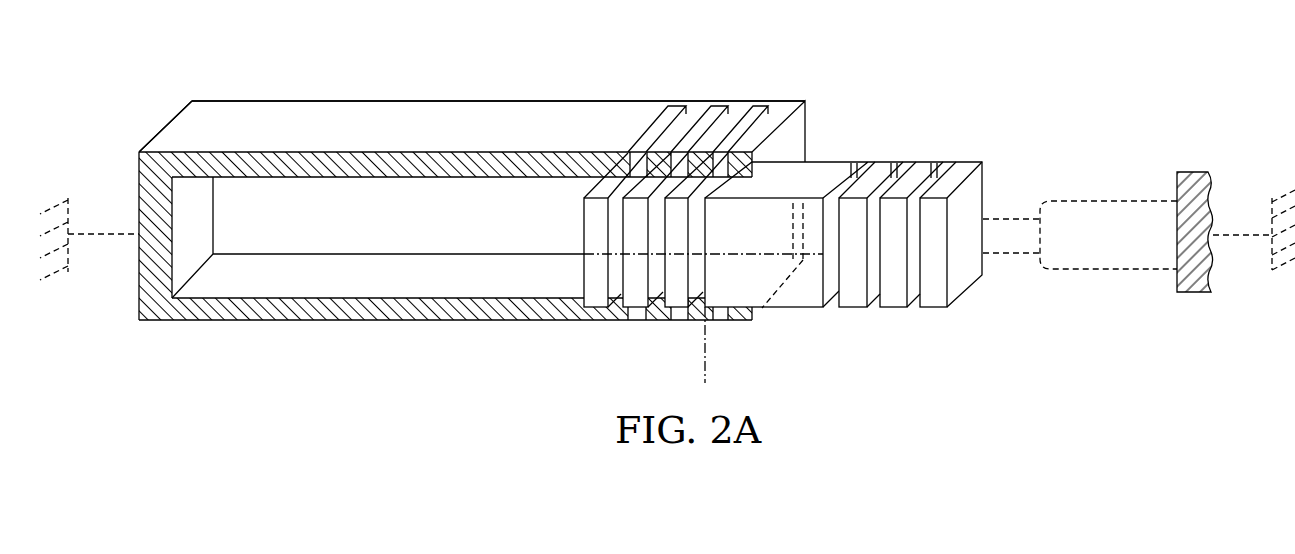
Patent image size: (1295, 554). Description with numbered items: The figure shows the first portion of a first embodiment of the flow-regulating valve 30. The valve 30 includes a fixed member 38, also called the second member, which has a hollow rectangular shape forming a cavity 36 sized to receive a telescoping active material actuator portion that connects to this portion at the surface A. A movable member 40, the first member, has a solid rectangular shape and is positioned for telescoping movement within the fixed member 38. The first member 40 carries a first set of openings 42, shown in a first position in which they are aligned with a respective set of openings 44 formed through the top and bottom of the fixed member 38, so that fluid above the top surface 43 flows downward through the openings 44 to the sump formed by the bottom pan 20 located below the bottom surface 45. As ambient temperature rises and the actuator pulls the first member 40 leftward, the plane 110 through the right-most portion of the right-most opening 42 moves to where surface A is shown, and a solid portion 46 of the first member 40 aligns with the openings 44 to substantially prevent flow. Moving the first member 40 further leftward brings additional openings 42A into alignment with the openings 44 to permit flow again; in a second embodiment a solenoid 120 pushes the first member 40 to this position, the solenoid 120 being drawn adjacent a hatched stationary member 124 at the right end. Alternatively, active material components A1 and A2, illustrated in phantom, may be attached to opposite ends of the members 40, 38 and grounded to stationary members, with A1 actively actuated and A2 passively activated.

The bottom pan 20 is at (472, 81).
The flow-regulating valve 30 is at (857, 32).
The cavity 36 is at (386, 238).
The fixed member 38 is at (457, 127).
The movable member 40 is at (822, 172).
The first set of openings 42 is at (698, 262).
The additional openings 42A is at (933, 163).
The top surface 43 is at (556, 125).
The openings 44 is at (742, 123).
The bottom surface 45 is at (488, 280).
The solid portion 46 is at (763, 250).
The plane 110 is at (705, 347).
The solenoid 120 is at (1112, 200).
The support wall 124 is at (1195, 292).
The surface A is at (578, 230).
The active material component A1 is at (112, 232).
The active material component A2 is at (1236, 231).